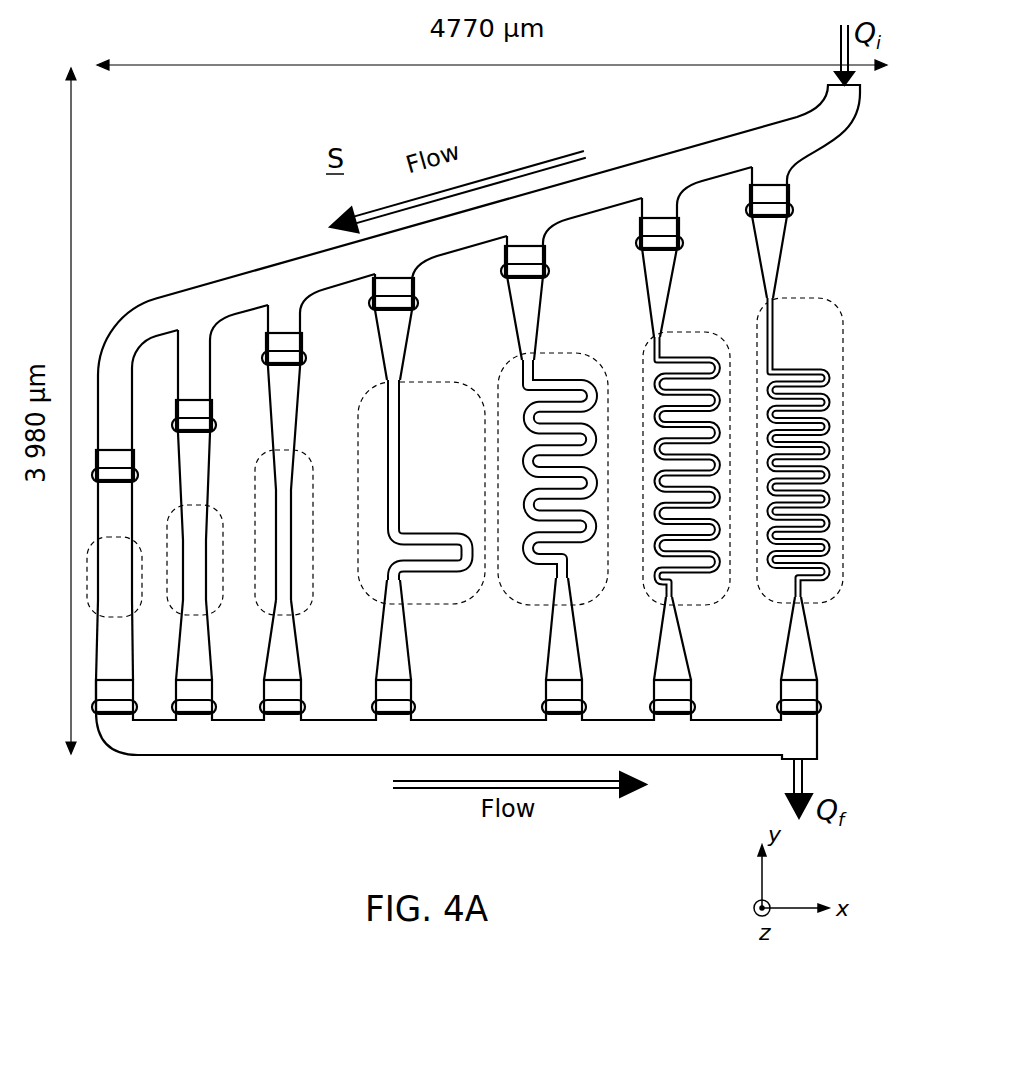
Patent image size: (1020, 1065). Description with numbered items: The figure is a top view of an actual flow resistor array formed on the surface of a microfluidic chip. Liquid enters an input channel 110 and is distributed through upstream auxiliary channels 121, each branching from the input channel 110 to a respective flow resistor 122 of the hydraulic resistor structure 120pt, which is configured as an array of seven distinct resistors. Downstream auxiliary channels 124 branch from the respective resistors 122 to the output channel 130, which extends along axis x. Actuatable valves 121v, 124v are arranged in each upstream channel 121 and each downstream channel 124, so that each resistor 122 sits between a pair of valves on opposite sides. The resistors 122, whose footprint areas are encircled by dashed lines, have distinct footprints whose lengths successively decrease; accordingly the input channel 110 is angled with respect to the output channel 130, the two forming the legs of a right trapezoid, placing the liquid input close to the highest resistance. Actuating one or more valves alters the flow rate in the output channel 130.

The input channel 110 is at (697, 157).
The hydraulic resistor structure 120pt is at (280, 216).
The upstream auxiliary channel 121 is at (848, 300).
The actuatable valve 121v is at (790, 180).
The flow resistor 122 is at (848, 300).
The downstream auxiliary channel 124 is at (848, 600).
The actuatable valve 124v is at (140, 687).
The output channel 130 is at (240, 755).